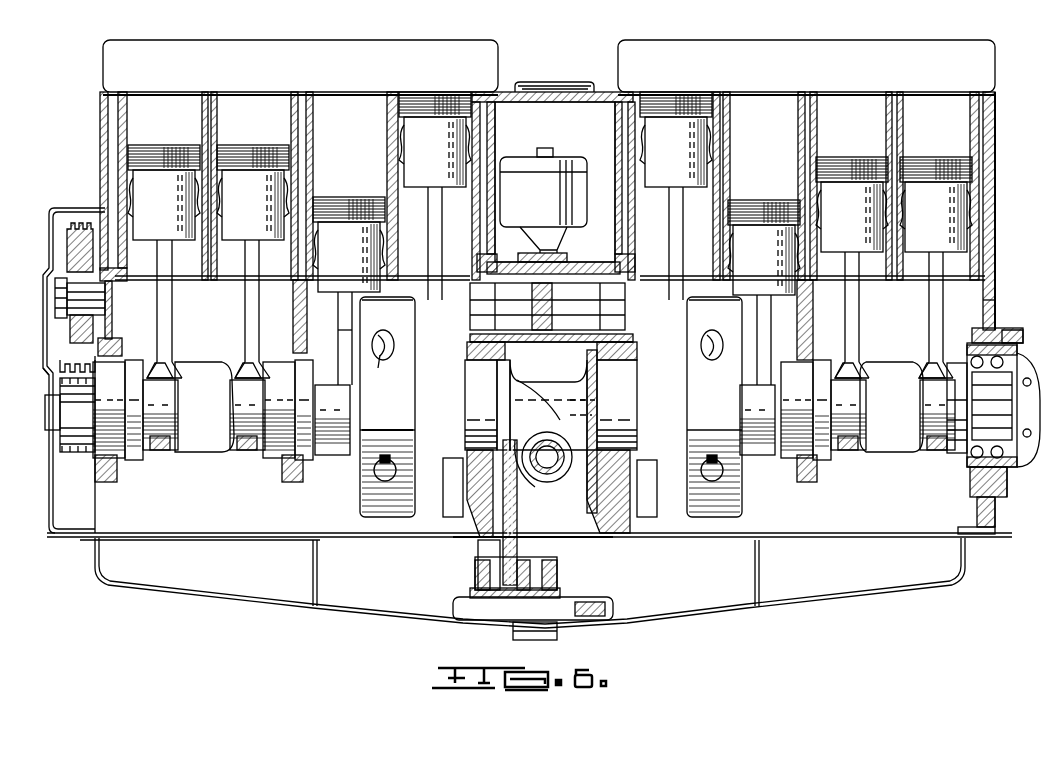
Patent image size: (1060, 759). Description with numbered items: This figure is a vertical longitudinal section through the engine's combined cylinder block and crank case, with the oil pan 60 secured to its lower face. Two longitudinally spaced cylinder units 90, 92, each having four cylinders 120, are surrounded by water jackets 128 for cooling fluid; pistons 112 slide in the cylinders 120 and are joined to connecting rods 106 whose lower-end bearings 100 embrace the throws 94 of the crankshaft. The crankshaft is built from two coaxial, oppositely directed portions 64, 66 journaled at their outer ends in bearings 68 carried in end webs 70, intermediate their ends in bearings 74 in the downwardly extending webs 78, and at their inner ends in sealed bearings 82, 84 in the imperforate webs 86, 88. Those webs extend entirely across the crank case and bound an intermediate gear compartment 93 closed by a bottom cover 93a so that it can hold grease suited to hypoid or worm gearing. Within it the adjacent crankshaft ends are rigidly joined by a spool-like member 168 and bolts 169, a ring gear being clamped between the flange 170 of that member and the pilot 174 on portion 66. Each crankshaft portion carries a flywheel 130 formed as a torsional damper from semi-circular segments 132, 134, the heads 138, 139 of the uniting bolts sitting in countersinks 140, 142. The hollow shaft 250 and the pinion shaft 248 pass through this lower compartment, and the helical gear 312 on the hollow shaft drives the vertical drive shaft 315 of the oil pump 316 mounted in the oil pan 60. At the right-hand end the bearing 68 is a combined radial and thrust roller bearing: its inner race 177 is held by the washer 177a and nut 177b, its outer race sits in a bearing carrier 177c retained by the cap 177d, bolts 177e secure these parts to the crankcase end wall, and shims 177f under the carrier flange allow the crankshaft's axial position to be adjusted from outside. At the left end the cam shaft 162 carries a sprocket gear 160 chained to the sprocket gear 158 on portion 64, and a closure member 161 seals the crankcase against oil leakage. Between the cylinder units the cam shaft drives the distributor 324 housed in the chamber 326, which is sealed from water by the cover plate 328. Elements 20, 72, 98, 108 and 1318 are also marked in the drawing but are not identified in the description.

The engine block 20 is at (1000, 241).
The oil pan 60 is at (802, 605).
The crank shaft portion 64 is at (205, 437).
The crank shaft portion 66 is at (890, 452).
The bearing 68 is at (110, 484).
The end web 70 is at (110, 338).
The pump housing portion 72 is at (590, 496).
The bearing 74 is at (288, 482).
The web 78 is at (300, 322).
The sealed bearing 82 is at (552, 347).
The sealed bearing 84 is at (551, 345).
The web 86 is at (468, 514).
The web 88 is at (645, 512).
The cylinder unit 90 is at (330, 40).
The cylinder unit 92 is at (808, 40).
The intermediate gear compartment 93 is at (560, 536).
The bottom cover 93a is at (600, 534).
The throw 94 is at (160, 385).
The cylinder block side wall 98 is at (995, 130).
The bearing 100 is at (160, 455).
The connecting rod 106 is at (441, 232).
The connecting rod shank 108 is at (338, 330).
The piston 112 is at (152, 148).
The cylinder 120 is at (128, 122).
The water jacket 128 is at (627, 150).
The flywheel 130 is at (386, 520).
The outer semi-circular segment 132 is at (393, 300).
The outer semi-circular segment 134 is at (551, 468).
The bolt head 138 is at (547, 335).
The bolt head 139 is at (388, 465).
The countersink 140 is at (387, 364).
The countersink 142 is at (378, 482).
The sprocket gear 158 is at (80, 452).
The sprocket gear 160 is at (47, 336).
The closure member 161 is at (43, 362).
The cam shaft 162 is at (168, 272).
The spool-like member 168 is at (545, 380).
The bolt 169 is at (512, 378).
The flange 170 is at (538, 480).
The pilot 174 is at (590, 372).
The inner race 177 is at (1010, 352).
The washer 177a is at (998, 334).
The nut 177b is at (1014, 410).
The bearing carrier 177c is at (1005, 486).
The cap 177d is at (1000, 510).
The bolt 177e is at (1014, 341).
The shim 177f is at (990, 328).
The pinion shaft 248 is at (515, 422).
The hollow shaft 250 is at (586, 426).
The helical gear 312 is at (520, 500).
The drive shaft 315 is at (492, 540).
The oil pump 316 is at (560, 574).
The distributor 324 is at (517, 165).
The chamber 326 is at (580, 95).
The cover plate 328 is at (536, 82).
The worm shaft 1318 is at (547, 306).